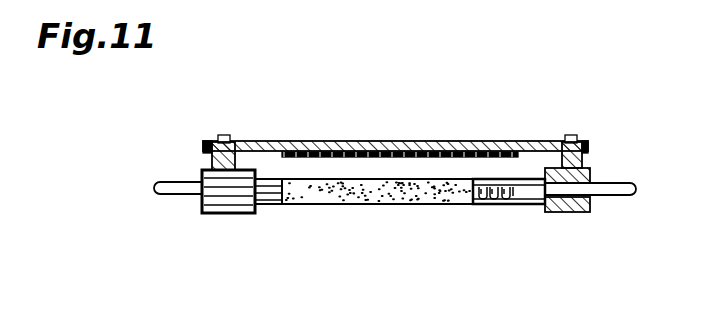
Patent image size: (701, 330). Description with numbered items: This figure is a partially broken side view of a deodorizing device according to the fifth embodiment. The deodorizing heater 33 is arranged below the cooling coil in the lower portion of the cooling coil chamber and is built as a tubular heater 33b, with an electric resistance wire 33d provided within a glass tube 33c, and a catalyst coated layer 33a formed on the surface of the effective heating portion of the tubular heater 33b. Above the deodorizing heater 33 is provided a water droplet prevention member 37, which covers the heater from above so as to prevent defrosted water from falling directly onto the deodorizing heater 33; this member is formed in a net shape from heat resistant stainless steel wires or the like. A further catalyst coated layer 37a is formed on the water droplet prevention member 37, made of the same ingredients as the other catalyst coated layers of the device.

The deodorizing heater 33 is at (378, 229).
The catalyst coated layer 33a is at (377, 246).
The tubular heater 33b is at (218, 223).
The glass tube 33c is at (578, 222).
The electric resistance wire 33d is at (487, 245).
The water droplet prevention member 37 is at (395, 116).
The catalyst coated layer 37a is at (400, 110).